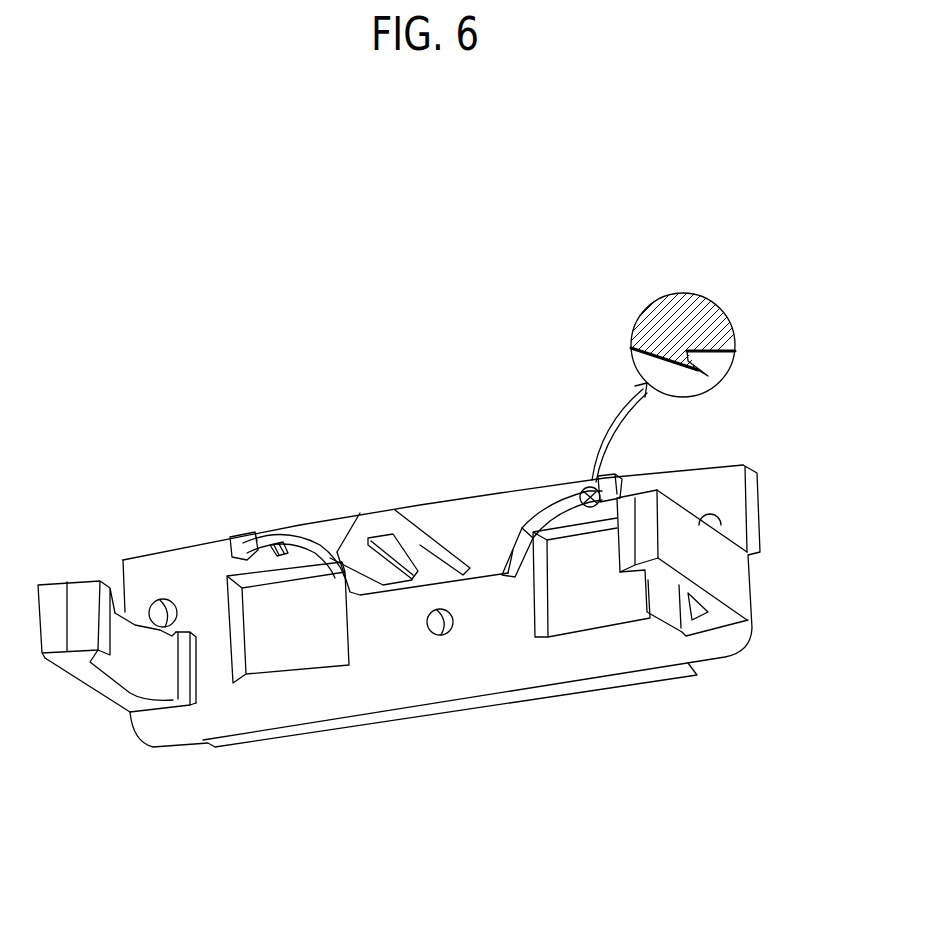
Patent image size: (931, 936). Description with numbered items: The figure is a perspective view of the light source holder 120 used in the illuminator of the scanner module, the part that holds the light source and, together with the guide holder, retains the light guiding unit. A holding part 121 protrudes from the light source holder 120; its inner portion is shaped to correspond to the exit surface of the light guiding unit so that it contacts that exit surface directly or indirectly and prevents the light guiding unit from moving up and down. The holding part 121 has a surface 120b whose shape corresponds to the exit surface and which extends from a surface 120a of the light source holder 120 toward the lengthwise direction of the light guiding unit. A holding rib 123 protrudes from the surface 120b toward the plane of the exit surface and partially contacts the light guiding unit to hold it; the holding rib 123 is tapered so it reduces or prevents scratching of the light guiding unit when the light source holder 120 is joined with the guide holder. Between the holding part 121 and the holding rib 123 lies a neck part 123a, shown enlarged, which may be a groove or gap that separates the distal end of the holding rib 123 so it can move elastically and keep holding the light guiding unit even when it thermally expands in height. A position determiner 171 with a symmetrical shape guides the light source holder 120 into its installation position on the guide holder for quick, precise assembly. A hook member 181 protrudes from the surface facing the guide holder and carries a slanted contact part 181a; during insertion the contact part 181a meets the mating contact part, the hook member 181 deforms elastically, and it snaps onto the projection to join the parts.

The light source holder 120 is at (513, 477).
The surface of the light source holder 120a is at (173, 567).
The surface of the holding part 120b is at (510, 552).
The holding part 121 is at (243, 537).
The holding rib 123 is at (287, 547).
The neck part 123a is at (710, 352).
The position determiner 171 is at (383, 527).
The hook member 181 is at (97, 686).
The contact part 181a is at (85, 592).